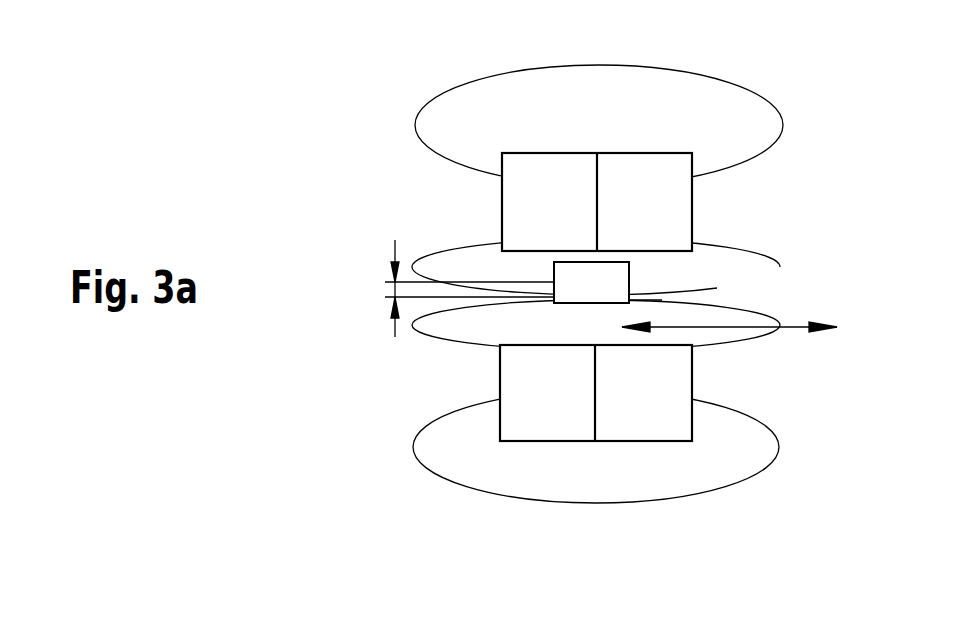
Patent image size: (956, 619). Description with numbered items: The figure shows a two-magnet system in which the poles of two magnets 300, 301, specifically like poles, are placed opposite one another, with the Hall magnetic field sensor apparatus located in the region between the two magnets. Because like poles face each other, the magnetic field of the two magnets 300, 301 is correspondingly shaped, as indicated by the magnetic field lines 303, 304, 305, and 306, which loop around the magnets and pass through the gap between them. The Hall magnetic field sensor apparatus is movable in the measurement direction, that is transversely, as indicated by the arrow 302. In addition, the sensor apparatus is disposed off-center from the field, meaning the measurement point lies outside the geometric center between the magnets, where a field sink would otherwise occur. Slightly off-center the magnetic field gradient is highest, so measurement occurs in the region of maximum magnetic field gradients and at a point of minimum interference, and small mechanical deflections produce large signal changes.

The magnet 300 is at (570, 153).
The magnet 301 is at (570, 441).
The arrow 302 is at (740, 328).
The magnetic field line 303 is at (460, 243).
The magnetic field line 304 is at (437, 343).
The magnetic field line 305 is at (438, 482).
The magnetic field line 306 is at (478, 79).